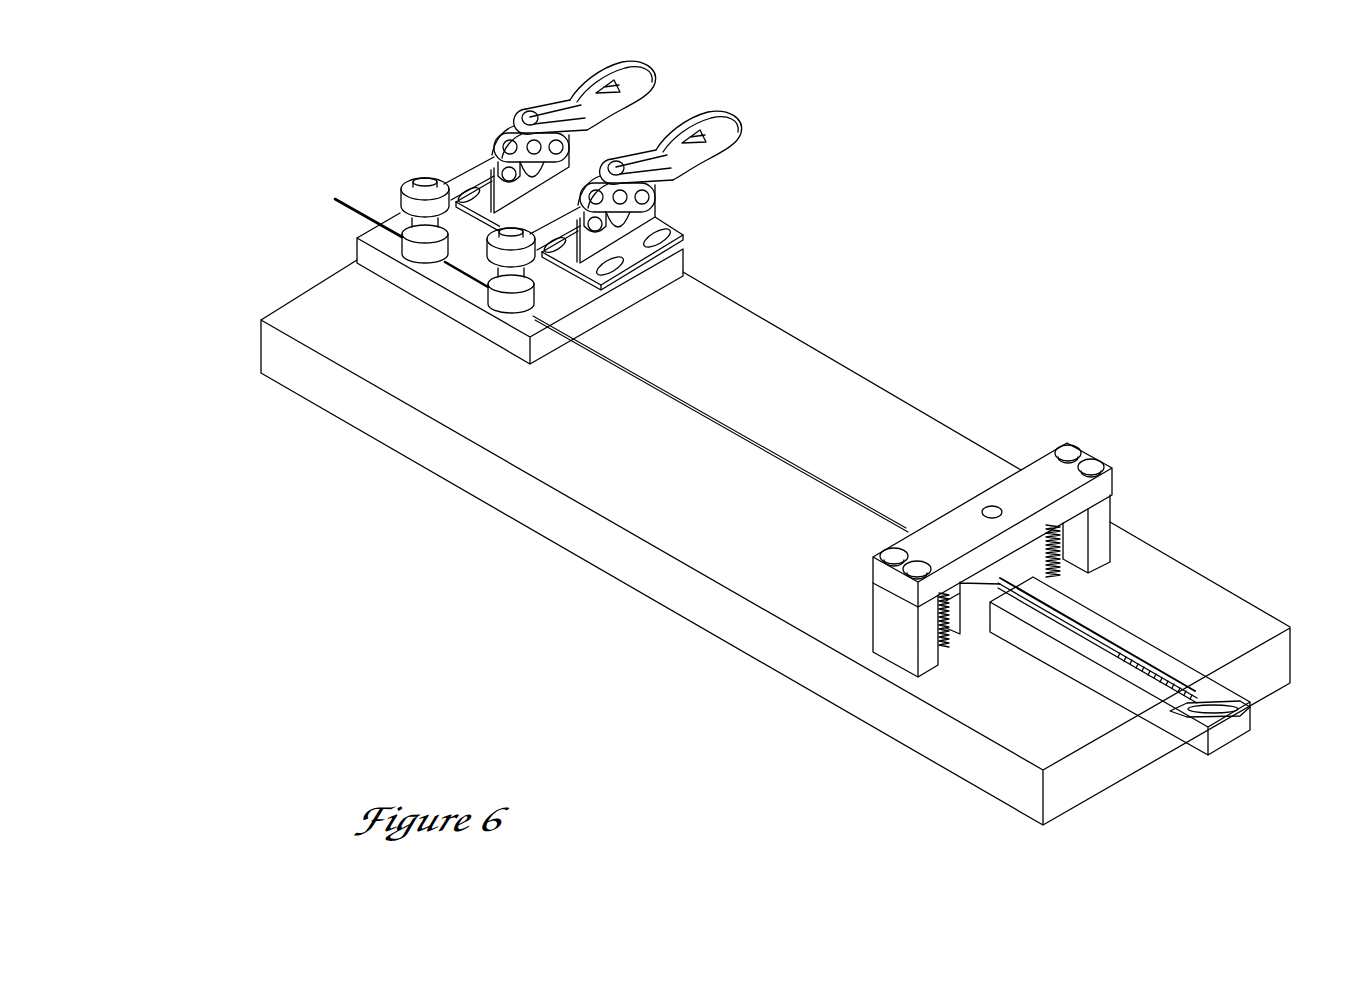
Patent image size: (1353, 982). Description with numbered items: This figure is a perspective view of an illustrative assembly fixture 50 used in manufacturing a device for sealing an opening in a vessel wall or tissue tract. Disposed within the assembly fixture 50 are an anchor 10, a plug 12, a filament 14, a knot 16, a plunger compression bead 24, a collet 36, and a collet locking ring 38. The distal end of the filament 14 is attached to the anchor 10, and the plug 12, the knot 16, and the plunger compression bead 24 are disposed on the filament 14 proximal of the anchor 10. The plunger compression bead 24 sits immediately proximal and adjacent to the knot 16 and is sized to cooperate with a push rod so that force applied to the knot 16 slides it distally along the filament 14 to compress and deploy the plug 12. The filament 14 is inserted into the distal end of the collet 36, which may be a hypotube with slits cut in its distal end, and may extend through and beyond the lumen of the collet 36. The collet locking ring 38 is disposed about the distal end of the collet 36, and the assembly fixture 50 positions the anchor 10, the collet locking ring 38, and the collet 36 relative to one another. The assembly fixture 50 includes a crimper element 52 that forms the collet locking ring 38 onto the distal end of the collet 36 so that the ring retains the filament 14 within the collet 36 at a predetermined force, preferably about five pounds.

The anchor 10 is at (1218, 708).
The plug 12 is at (1193, 688).
The filament 14 is at (340, 207).
The knot 16 is at (1077, 628).
The plunger compression bead 24 is at (1053, 615).
The collet 36 is at (806, 472).
The collet locking ring 38 is at (997, 587).
The assembly fixture 50 is at (827, 382).
The crimper element 52 is at (1037, 467).